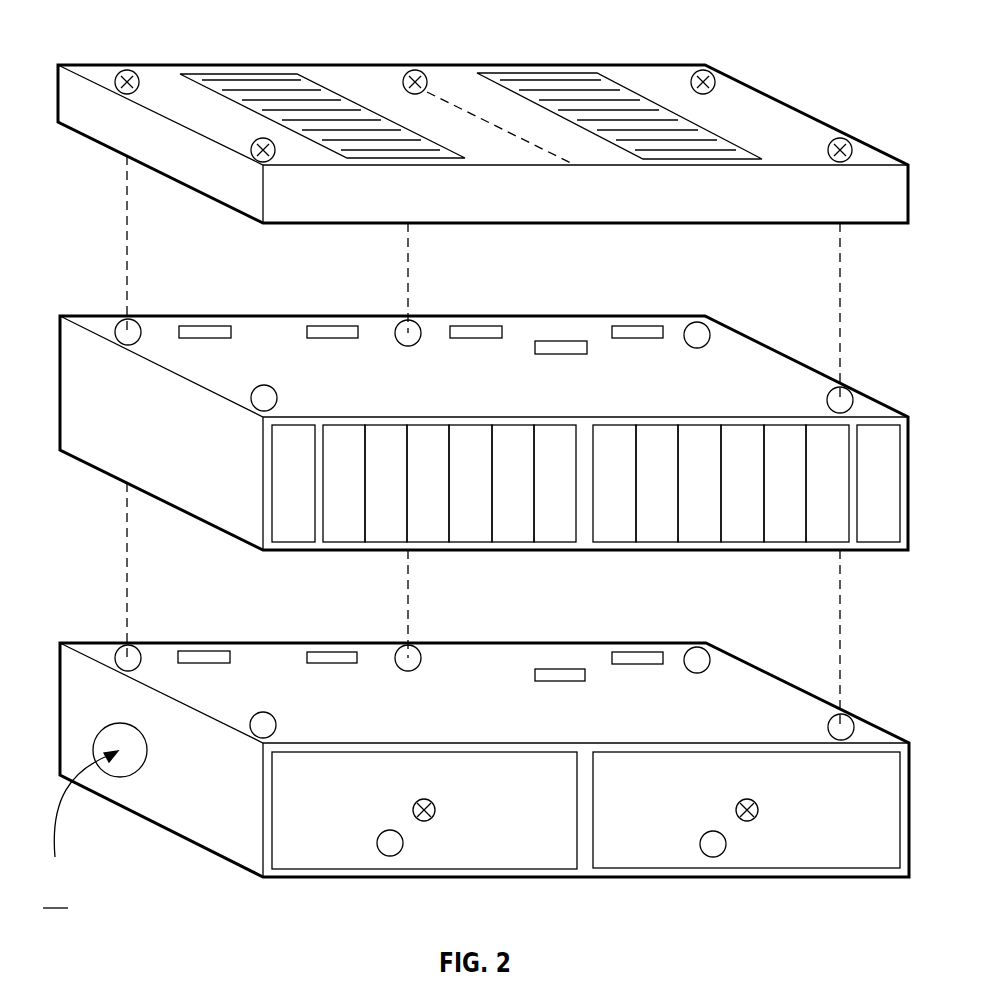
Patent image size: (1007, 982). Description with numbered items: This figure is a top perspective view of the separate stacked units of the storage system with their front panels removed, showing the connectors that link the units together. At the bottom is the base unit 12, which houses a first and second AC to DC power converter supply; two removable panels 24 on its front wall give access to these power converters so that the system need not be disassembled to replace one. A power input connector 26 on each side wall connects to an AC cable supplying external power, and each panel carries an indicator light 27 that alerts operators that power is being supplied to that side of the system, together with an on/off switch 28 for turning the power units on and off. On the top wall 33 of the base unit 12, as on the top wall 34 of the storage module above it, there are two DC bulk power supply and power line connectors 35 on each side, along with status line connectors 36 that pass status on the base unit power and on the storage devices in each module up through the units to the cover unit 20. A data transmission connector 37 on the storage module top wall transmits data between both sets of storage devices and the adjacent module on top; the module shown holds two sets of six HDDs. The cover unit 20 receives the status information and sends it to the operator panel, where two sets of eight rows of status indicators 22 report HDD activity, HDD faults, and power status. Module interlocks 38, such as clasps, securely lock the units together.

The base unit 12 is at (862, 730).
The cover unit 20 is at (72, 133).
The status indicators 22 is at (238, 73).
The removable panel 24 is at (410, 645).
The power input connector 26 is at (147, 758).
The indicator light 27 is at (428, 823).
The on/off switch 28 is at (390, 858).
The top wall of the base unit 33 is at (505, 650).
The top wall of the storage module 34 is at (595, 316).
The DC bulk power supply and power line connector 35 is at (205, 326).
The status line connector 36 is at (328, 326).
The data transmission connector 37 is at (480, 326).
The module interlock 38 is at (121, 72).